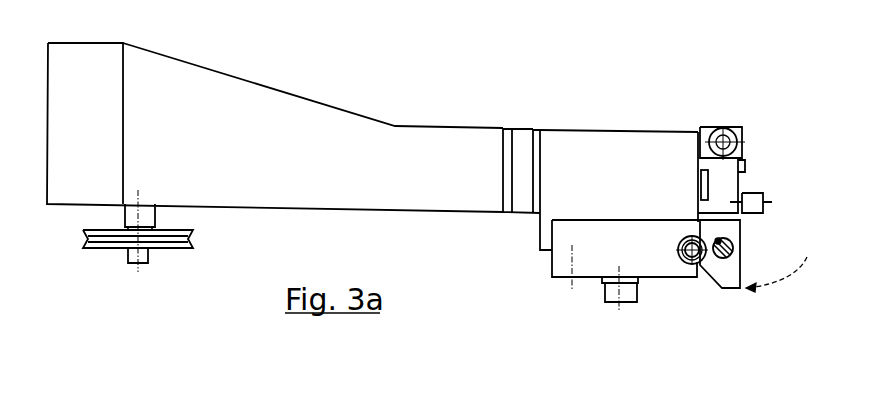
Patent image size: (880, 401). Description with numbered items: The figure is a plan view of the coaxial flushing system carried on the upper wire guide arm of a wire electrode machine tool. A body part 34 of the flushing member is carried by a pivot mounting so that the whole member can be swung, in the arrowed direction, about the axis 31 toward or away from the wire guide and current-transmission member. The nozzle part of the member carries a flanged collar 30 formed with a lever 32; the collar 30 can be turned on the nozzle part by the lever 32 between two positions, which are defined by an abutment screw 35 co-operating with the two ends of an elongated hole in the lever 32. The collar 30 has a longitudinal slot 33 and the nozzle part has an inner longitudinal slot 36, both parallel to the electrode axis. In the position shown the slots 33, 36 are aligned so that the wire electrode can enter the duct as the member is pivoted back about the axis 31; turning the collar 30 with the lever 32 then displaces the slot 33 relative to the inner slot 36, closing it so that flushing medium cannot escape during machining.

The flanged collar 30 is at (698, 263).
The axis 31 is at (732, 125).
The lever 32 is at (730, 273).
The longitudinal slot 33 is at (683, 262).
The body part 34 is at (723, 182).
The abutment screw 35 is at (730, 262).
The longitudinal slot 36 is at (683, 237).